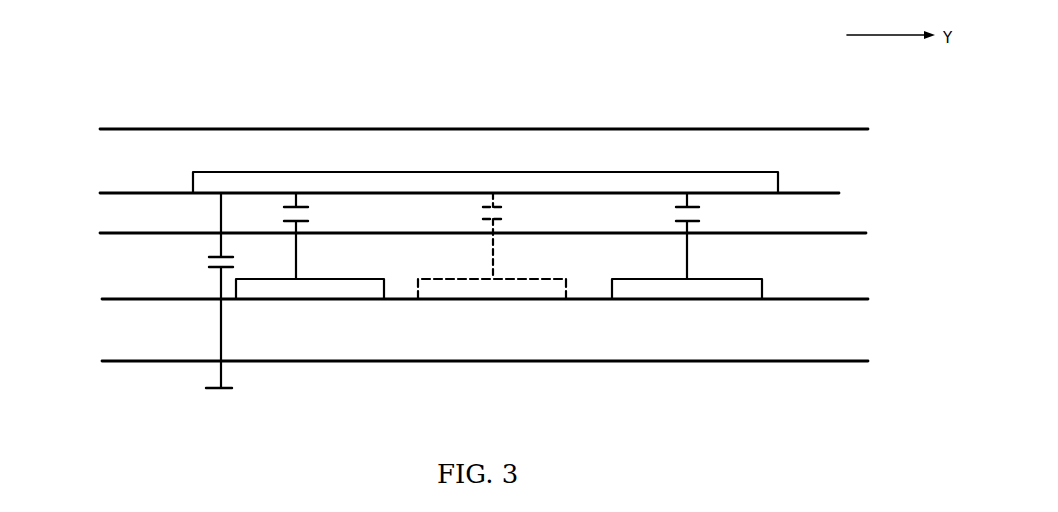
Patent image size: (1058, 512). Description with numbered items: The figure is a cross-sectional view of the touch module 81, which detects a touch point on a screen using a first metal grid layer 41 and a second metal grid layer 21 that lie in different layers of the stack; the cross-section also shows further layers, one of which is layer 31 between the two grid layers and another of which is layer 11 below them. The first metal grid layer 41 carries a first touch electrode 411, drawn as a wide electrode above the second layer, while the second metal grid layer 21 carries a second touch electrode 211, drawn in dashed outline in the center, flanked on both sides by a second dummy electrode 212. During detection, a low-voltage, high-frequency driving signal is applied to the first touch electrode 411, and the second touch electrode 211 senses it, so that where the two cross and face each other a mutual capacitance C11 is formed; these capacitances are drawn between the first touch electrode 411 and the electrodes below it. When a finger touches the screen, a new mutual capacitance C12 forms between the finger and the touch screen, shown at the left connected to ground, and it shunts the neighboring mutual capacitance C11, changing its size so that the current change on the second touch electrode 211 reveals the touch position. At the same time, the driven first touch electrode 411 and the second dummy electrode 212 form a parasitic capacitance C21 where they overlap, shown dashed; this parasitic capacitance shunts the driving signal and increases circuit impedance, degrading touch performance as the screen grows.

The touch module 81 is at (133, 63).
The first metal grid layer 41 is at (838, 163).
The first touch electrode 411 is at (418, 184).
The third layer 31 is at (847, 221).
The second metal grid layer 21 is at (838, 277).
The first layer (substrate) 11 is at (838, 342).
The second dummy electrode 212 is at (338, 285).
The second touch electrode 211 is at (472, 285).
The mutual capacitance C11 is at (509, 236).
The parasitic capacitance C21 is at (514, 236).
The mutual capacitance C12 is at (202, 290).